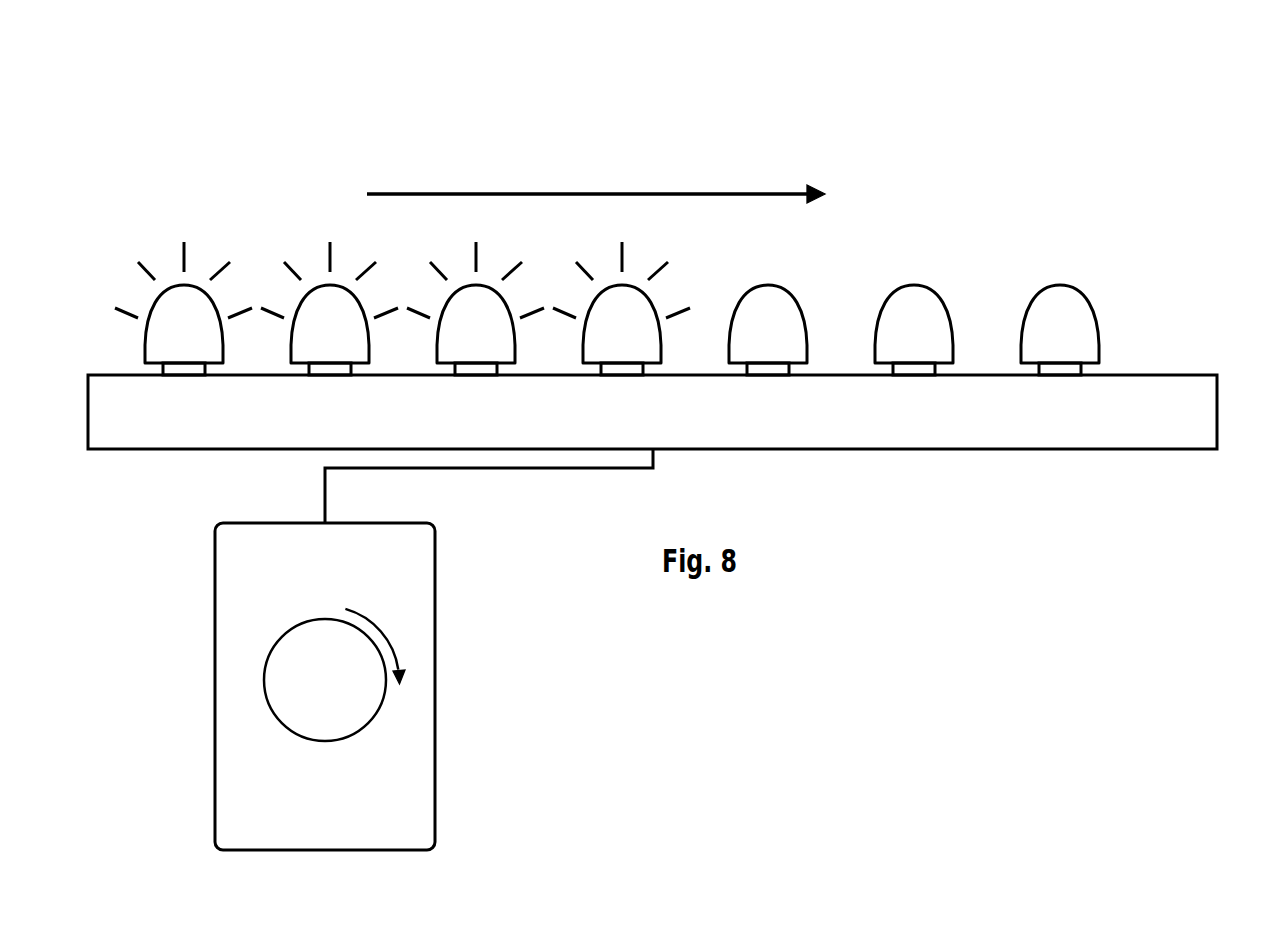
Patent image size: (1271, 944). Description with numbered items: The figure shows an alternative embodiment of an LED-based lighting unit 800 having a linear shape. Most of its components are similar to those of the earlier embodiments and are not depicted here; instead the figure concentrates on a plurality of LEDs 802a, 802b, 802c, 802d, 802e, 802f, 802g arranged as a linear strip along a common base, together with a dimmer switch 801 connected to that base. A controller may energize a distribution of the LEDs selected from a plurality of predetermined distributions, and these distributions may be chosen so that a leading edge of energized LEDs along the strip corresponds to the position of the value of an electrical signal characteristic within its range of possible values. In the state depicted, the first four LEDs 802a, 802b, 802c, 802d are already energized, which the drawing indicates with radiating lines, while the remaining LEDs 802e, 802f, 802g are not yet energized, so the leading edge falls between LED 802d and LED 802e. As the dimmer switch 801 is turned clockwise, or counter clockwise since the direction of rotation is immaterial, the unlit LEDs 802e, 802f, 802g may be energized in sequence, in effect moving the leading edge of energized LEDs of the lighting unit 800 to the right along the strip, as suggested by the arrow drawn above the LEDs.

The LED-based lighting unit 800 is at (121, 132).
The dimmer switch 801 is at (343, 847).
The LED 802a is at (208, 336).
The LED 802b is at (354, 336).
The LED 802c is at (500, 336).
The LED 802d is at (646, 336).
The LED 802e is at (792, 336).
The LED 802f is at (938, 336).
The LED 802g is at (1084, 336).